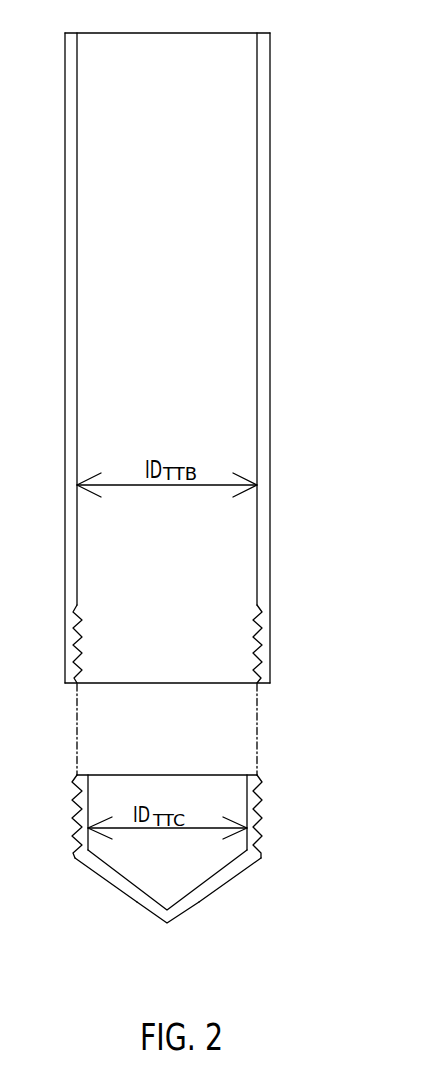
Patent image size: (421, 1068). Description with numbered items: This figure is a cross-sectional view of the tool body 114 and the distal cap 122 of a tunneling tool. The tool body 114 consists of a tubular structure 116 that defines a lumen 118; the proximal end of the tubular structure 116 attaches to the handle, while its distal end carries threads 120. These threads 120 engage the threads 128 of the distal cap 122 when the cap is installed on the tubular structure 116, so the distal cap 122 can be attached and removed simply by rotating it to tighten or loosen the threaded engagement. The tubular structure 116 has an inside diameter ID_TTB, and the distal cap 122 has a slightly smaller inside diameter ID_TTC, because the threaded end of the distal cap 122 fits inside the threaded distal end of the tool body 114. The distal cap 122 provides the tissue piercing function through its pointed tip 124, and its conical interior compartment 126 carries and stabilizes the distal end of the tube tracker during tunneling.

The tool body 114 is at (272, 547).
The tubular structure 116 is at (271, 444).
The lumen 118 is at (225, 38).
The threads 120 is at (258, 671).
The distal cap 122 is at (254, 871).
The pointed tip 124 is at (169, 923).
The conical interior compartment 126 is at (140, 867).
The threads 128 is at (75, 809).